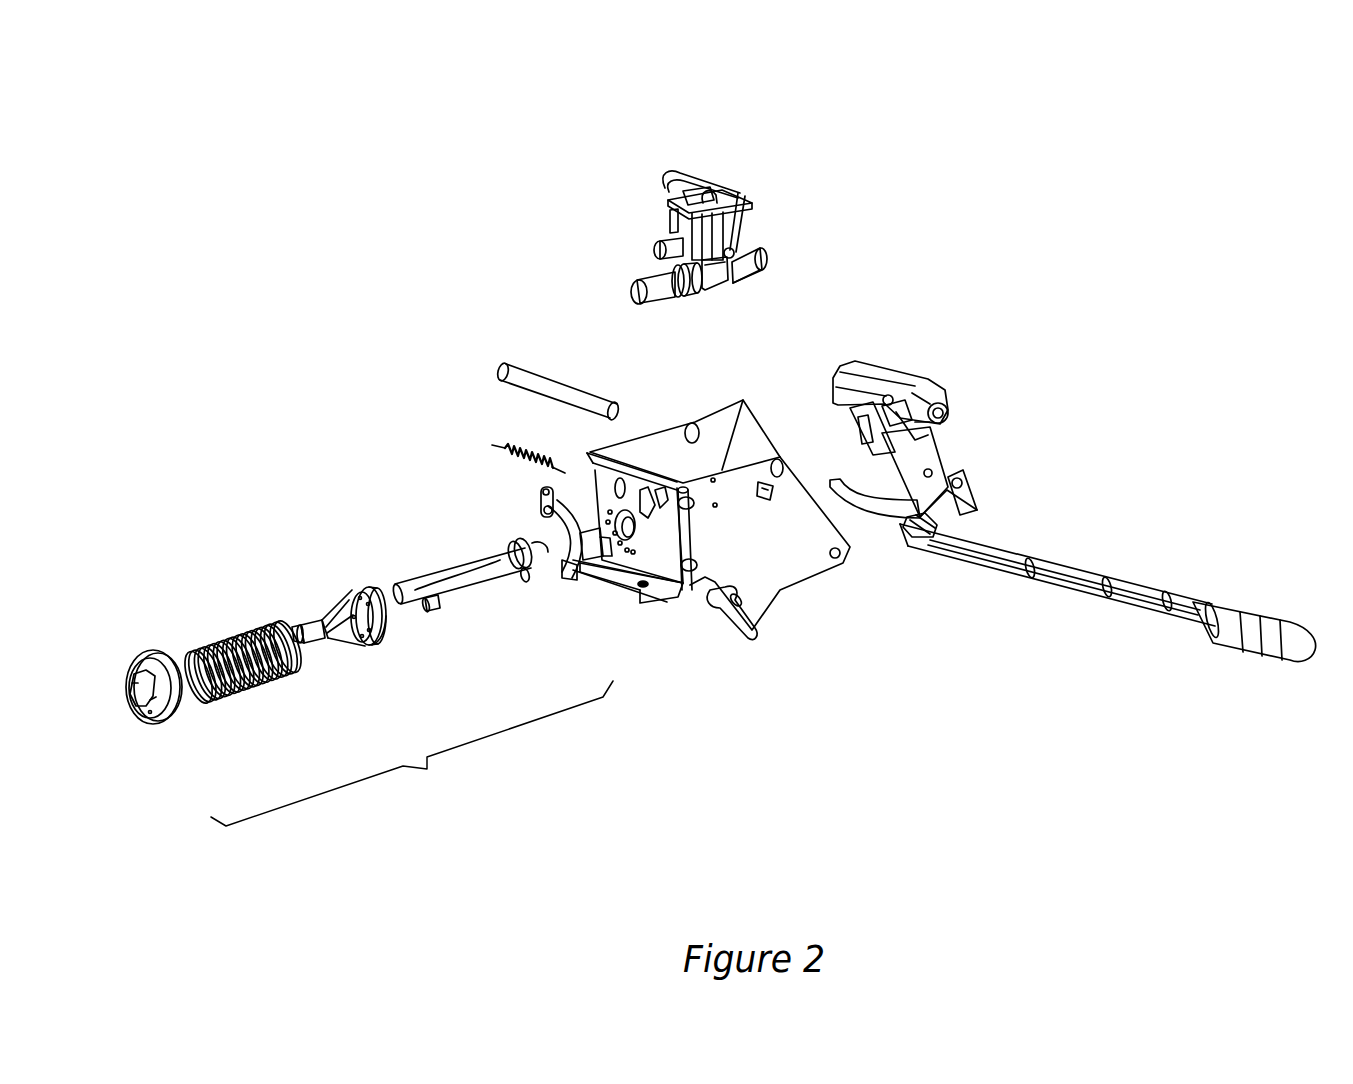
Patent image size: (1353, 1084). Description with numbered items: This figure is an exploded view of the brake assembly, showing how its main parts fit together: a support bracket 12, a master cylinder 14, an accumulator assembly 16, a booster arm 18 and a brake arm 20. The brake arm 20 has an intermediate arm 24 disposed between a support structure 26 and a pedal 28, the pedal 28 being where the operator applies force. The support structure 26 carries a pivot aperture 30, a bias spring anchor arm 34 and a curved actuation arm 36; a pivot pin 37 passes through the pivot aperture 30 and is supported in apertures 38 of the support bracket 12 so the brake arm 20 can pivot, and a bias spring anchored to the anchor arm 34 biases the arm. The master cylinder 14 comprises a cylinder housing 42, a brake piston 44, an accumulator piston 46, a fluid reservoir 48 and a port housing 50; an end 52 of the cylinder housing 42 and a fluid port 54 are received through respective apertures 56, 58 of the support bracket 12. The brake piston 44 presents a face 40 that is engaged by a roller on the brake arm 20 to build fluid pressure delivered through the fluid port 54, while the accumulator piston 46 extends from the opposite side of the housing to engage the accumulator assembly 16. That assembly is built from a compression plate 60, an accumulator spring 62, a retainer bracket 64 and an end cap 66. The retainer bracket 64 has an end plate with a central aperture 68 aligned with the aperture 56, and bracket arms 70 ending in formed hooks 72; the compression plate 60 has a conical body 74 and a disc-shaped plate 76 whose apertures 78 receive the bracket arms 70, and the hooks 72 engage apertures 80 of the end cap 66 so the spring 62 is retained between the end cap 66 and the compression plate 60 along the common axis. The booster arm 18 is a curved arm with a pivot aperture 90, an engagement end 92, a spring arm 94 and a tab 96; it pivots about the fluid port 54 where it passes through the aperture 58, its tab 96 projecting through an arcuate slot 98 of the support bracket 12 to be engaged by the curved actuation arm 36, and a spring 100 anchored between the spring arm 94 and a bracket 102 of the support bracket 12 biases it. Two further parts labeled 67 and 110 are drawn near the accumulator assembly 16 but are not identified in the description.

The support bracket 12 is at (808, 585).
The master cylinder 14 is at (700, 168).
The accumulator assembly 16 is at (412, 753).
The booster arm 18 is at (587, 593).
The brake arm 20 is at (1060, 492).
The intermediate arm 24 is at (1072, 595).
The support structure 26 is at (867, 367).
The pedal 28 is at (1250, 617).
The pivot aperture 30 is at (947, 417).
The bias spring anchor arm 34 is at (888, 396).
The curved actuation arm 36 is at (880, 518).
The pivot pin 37 is at (535, 377).
The apertures 38 is at (777, 467).
The face 40 is at (757, 255).
The cylinder housing 42 is at (720, 280).
The brake piston 44 is at (752, 268).
The accumulator piston 46 is at (648, 287).
The fluid reservoir 48 is at (748, 197).
The port housing 50 is at (667, 233).
The end 52 is at (687, 293).
The fluid port 54 is at (650, 245).
The aperture 56 is at (613, 480).
The aperture 58 is at (598, 498).
The compression plate 60 is at (352, 590).
The accumulator spring 62 is at (234, 627).
The retainer bracket 64 is at (517, 543).
The end cap 66 is at (152, 655).
The retaining ring 67 is at (548, 547).
The central aperture 68 is at (500, 598).
The bracket arms 70 is at (422, 588).
The formed hooks 72 is at (420, 532).
The conical shaped body 74 is at (322, 617).
The disc-shaped plate 76 is at (364, 585).
The apertures 78 is at (372, 648).
The apertures 80 is at (163, 700).
The pivot aperture 90 is at (543, 513).
The engagement end 92 is at (578, 575).
The spring arm 94 is at (540, 490).
The tab 96 is at (577, 570).
The arcuate slot 98 is at (640, 490).
The spring 100 is at (493, 443).
The bracket 102 is at (660, 493).
The collar 110 is at (385, 613).